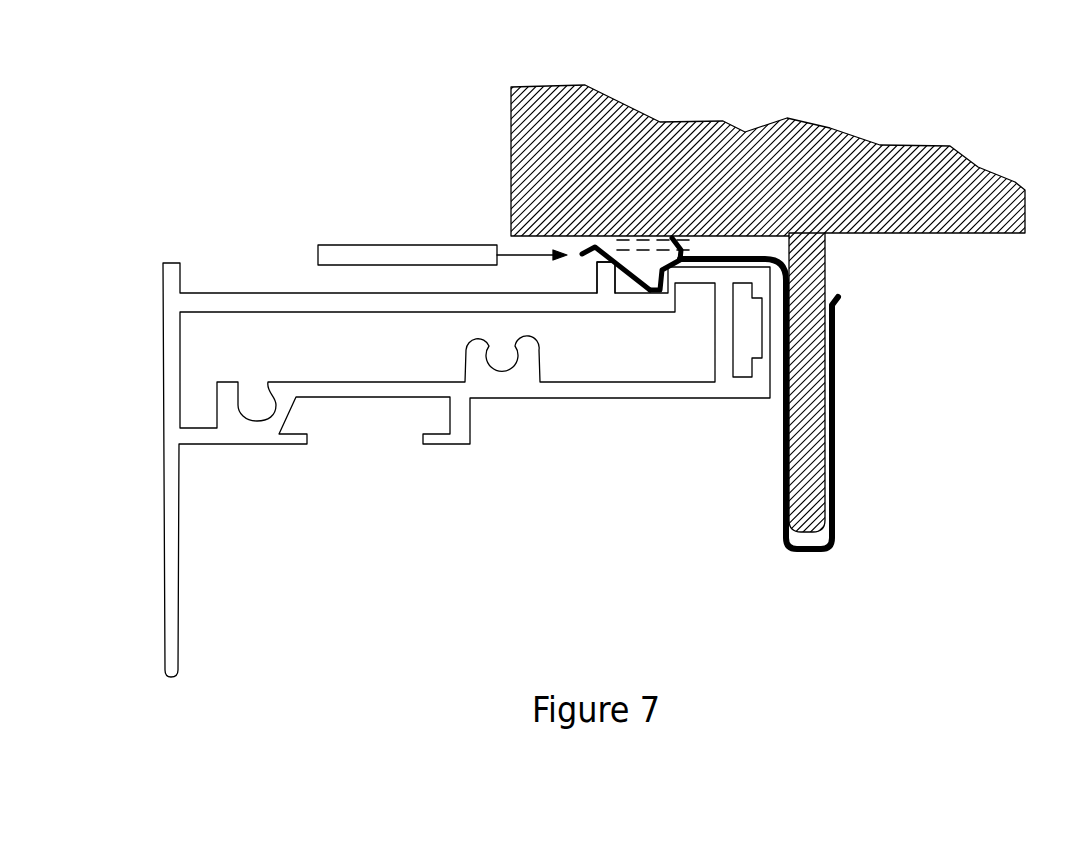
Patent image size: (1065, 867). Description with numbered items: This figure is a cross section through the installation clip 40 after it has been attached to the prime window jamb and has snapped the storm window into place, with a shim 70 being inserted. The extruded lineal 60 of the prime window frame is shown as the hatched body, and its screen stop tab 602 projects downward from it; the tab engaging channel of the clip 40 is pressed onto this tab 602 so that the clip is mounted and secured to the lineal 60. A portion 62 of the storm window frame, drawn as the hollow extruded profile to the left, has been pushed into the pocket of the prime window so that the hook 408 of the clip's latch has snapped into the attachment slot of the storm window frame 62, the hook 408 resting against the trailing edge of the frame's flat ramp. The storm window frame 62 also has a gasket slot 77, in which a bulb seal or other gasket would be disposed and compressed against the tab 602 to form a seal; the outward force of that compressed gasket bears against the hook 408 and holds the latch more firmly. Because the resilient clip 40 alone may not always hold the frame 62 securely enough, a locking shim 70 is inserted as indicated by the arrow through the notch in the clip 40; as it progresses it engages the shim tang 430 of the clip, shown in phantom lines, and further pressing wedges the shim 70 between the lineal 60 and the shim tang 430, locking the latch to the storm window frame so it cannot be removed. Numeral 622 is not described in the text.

The clip 40 is at (836, 483).
The lineal 60 is at (893, 128).
The storm window frame 62 is at (405, 425).
The shim 70 is at (385, 233).
The gasket slot 77 is at (747, 333).
The hook 408 is at (650, 290).
The shim tang 430 is at (682, 250).
The tab 602 is at (827, 265).
The hook 622 is at (677, 272).